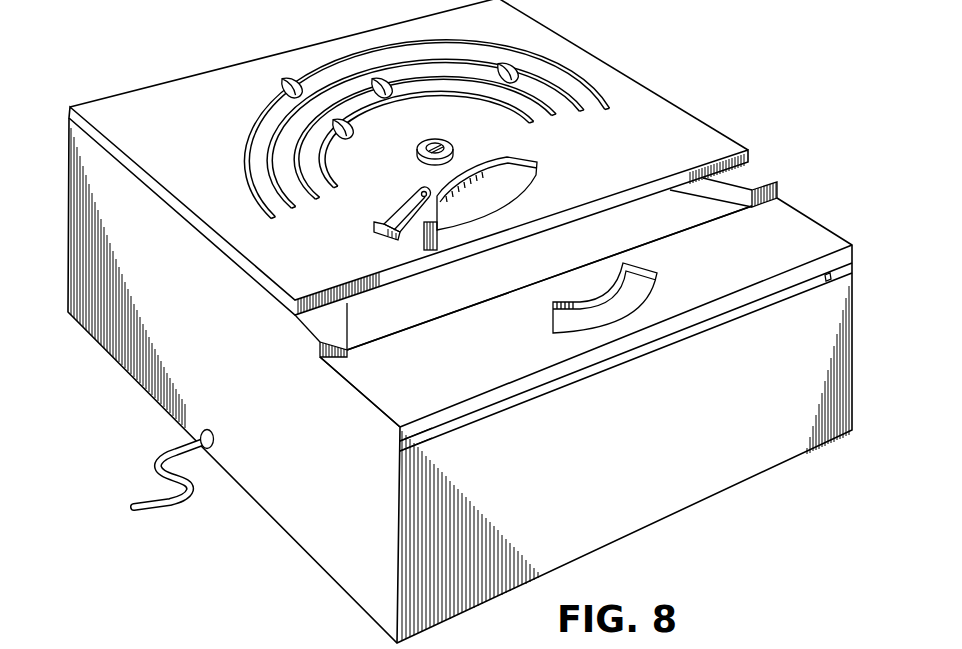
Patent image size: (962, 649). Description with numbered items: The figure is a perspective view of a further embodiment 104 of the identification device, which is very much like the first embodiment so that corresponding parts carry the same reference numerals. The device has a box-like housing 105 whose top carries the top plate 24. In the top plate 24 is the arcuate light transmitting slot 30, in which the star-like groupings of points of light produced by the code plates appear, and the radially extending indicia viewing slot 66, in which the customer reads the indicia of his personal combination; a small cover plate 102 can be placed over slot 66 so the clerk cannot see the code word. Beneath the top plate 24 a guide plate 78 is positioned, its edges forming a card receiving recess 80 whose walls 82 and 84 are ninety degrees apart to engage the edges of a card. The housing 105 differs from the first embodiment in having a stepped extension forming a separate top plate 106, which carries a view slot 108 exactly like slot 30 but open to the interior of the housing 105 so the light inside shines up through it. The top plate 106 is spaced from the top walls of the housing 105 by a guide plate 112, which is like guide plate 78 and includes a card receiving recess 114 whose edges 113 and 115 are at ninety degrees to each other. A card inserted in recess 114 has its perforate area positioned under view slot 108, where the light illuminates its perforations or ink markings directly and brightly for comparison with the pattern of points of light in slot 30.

The top plate 24 is at (196, 129).
The arcuate light transmitting slot 30 is at (511, 188).
The indicia viewing slot 66 is at (438, 236).
The guide plate 78 is at (750, 170).
The card receiving recess 80 is at (425, 308).
The wall of recess 82 is at (350, 322).
The wall of recess 84 is at (779, 182).
The cover plate 102 is at (381, 224).
The embodiment 104 is at (641, 75).
The housing 105 is at (685, 105).
The top plate 106 is at (462, 371).
The view slot 108 is at (645, 280).
The guide plate 112 is at (422, 441).
The edge of recess 113 is at (436, 442).
The card receiving recess 114 is at (500, 410).
The edge of recess 115 is at (827, 282).